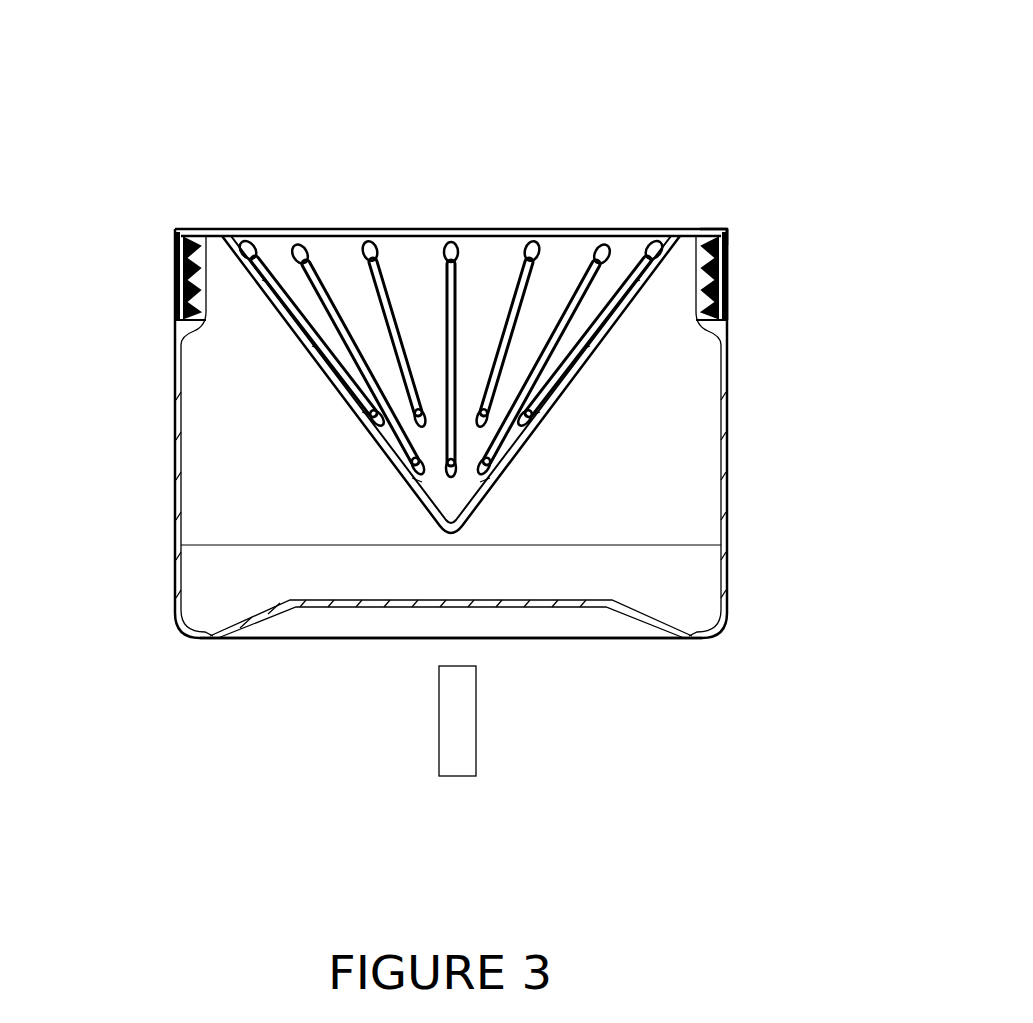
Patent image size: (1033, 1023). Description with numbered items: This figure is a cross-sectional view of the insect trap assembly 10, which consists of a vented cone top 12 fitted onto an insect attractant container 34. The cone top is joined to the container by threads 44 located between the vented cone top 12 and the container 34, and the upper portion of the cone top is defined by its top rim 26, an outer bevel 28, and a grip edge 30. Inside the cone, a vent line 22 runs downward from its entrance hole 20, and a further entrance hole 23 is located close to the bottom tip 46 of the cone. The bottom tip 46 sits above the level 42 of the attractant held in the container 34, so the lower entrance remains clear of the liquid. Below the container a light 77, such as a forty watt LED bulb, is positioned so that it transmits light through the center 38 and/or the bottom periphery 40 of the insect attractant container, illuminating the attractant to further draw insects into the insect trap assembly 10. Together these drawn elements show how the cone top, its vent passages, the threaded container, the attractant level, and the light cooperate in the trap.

The insect trap assembly 10 is at (612, 108).
The vented cone top 12 is at (276, 200).
The entrance hole 20 is at (369, 247).
The vent line 22 is at (402, 322).
The entrance hole 23 is at (446, 478).
The top rim 26 is at (703, 232).
The outer bevel 28 is at (720, 230).
The grip edge 30 is at (740, 277).
The insect attractant container 34 is at (736, 566).
The center 38 is at (570, 608).
The bottom periphery 40 is at (207, 642).
The level 42 is at (232, 545).
The threads 44 is at (182, 270).
The bottom tip 46 is at (467, 520).
The light 77 is at (438, 717).